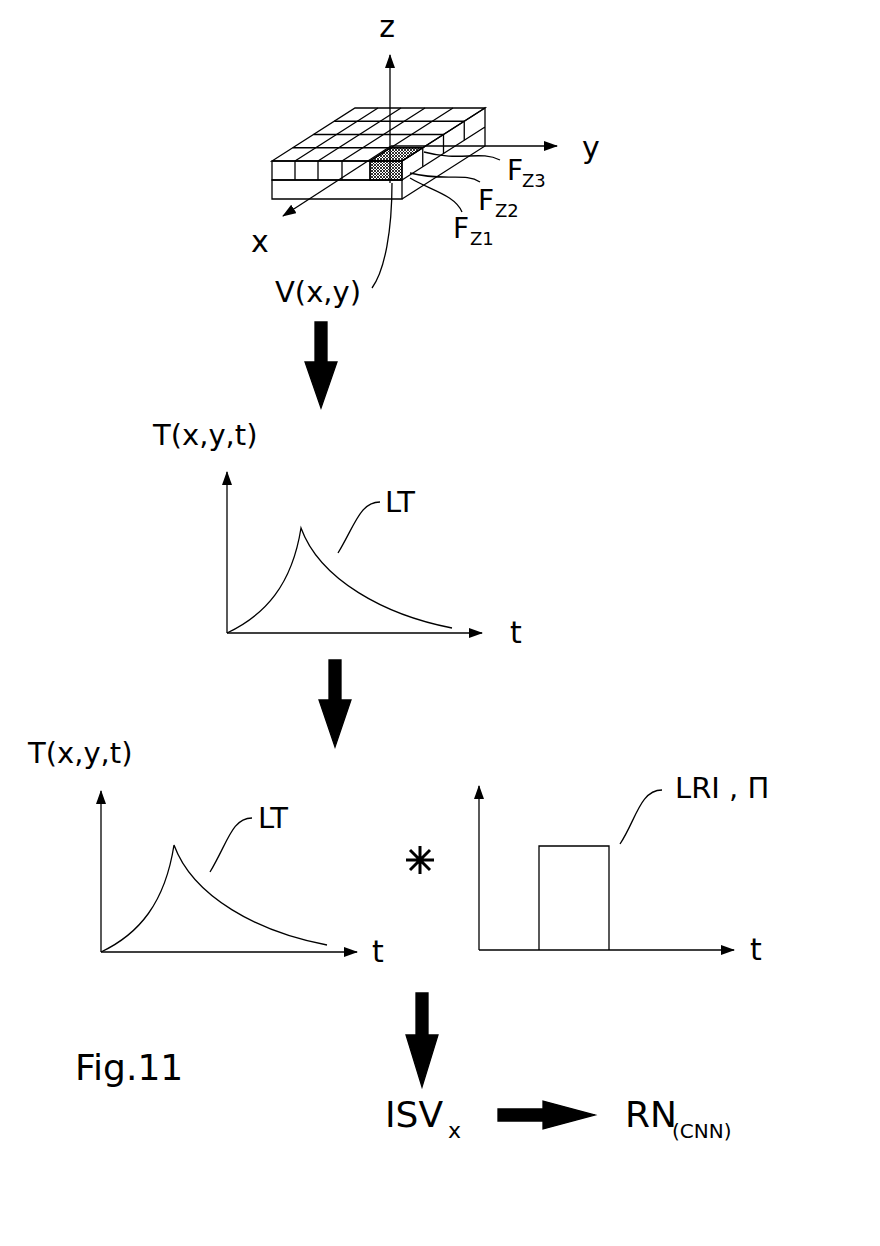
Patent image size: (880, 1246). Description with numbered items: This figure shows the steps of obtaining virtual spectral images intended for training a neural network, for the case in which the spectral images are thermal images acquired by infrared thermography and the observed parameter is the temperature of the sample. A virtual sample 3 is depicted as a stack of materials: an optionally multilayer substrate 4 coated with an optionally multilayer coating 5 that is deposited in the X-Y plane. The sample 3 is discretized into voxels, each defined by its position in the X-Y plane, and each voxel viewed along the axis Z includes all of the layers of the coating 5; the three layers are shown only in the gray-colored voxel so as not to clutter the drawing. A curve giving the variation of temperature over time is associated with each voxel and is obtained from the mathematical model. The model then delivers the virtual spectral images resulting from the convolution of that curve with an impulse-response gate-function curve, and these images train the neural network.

The virtual sample 3 is at (353, 121).
The substrate 4 is at (271, 192).
The coating 5 is at (271, 171).